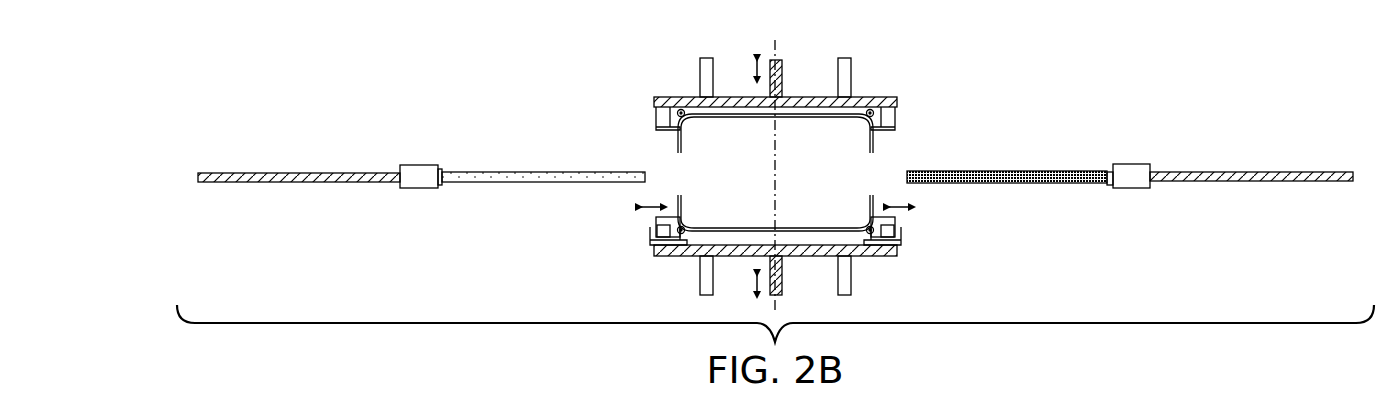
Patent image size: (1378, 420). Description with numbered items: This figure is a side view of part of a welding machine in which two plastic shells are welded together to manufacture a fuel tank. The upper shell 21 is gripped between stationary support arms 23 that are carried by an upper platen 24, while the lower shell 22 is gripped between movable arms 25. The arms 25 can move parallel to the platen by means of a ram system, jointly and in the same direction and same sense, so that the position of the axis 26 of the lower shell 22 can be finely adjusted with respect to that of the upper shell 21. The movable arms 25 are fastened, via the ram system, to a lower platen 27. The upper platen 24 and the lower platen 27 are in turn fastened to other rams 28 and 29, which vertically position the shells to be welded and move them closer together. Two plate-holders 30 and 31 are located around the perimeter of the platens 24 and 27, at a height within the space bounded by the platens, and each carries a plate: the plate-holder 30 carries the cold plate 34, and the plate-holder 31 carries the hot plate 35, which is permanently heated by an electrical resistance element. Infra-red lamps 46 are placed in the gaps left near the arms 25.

The upper shell 21 is at (798, 113).
The lower shell 22 is at (848, 234).
The stationary support arms 23 is at (668, 138).
The upper platen 24 is at (856, 105).
The movable arms 25 is at (656, 218).
The axis of the lower shell 26 is at (771, 188).
The lower platen 27 is at (800, 253).
The ram 28 is at (779, 61).
The ram 29 is at (782, 284).
The plate-holder 30 is at (410, 172).
The plate-holder 31 is at (1130, 172).
The cold plate 34 is at (520, 172).
The hot plate 35 is at (960, 172).
The infra-red lamps 46 is at (678, 110).